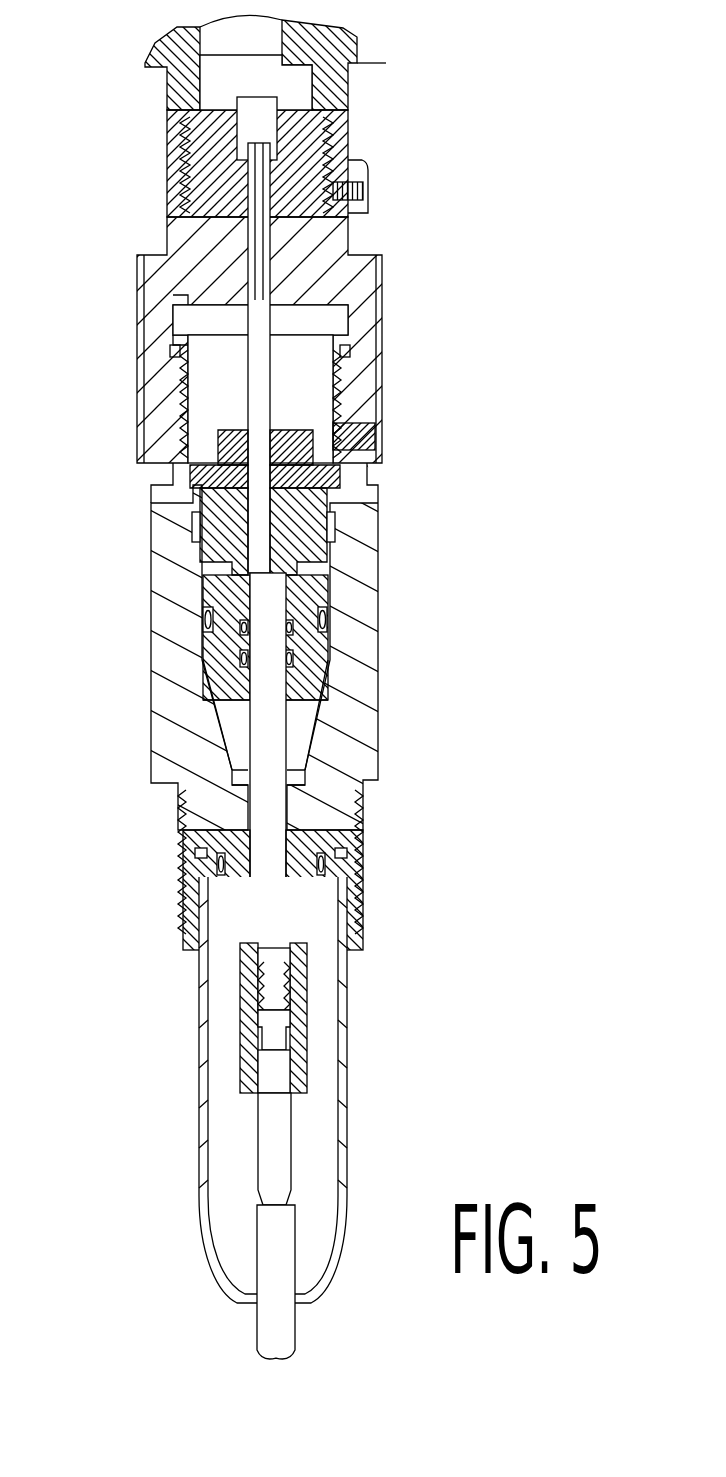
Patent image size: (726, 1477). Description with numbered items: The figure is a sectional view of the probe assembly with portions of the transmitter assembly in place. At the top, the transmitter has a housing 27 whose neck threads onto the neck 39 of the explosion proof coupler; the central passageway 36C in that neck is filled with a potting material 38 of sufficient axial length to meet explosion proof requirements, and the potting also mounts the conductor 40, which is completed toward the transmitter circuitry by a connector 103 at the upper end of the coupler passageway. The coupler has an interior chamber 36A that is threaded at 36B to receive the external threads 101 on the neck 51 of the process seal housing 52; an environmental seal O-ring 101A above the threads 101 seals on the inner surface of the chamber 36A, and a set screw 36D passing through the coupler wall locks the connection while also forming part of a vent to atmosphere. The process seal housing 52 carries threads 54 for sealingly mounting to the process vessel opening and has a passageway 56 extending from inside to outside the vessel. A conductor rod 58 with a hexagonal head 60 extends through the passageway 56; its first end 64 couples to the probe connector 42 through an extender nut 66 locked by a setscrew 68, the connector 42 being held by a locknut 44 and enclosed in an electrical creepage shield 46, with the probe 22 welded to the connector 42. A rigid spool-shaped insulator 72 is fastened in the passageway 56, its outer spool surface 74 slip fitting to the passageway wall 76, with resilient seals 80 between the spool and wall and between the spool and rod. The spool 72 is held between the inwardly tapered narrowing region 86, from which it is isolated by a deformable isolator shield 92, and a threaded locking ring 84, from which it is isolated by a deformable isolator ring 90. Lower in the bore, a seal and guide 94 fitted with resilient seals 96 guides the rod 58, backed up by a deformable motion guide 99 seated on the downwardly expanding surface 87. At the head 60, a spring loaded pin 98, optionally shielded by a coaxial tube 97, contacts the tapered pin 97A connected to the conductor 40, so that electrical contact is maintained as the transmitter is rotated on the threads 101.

The probe 22 is at (268, 1205).
The housing 27 is at (348, 77).
The interior chamber 36A is at (187, 290).
The threads 36B is at (173, 357).
The central passageway 36C is at (335, 242).
The set screw 36D is at (370, 432).
The potting material 38 is at (183, 160).
The neck 39 is at (205, 122).
The conductor 40 is at (235, 265).
The probe connector 42 is at (267, 1160).
The locknut 44 is at (243, 1100).
The electrical creepage shield 46 is at (350, 1110).
The neck 51 is at (367, 400).
The process seal housing 52 is at (381, 631).
The threads 54 is at (365, 813).
The passageway 56 is at (302, 740).
The conductor rod 58 is at (273, 780).
The hexagonal head 60 is at (330, 552).
The first end 64 is at (275, 980).
The extender nut 66 is at (297, 1013).
The setscrew 68 is at (280, 1070).
The spool-shaped insulator 72 is at (330, 588).
The outer spool surface 74 is at (207, 662).
The passageway wall 76 is at (317, 668).
The resilient seals 80 is at (245, 632).
The threaded locking ring 84 is at (330, 484).
The narrowing region 86 is at (215, 752).
The downwardly expanding surface 87 is at (207, 835).
The isolator ring 90 is at (340, 515).
The isolator shield 92 is at (213, 703).
The seal and guide 94 is at (318, 878).
The resilient seals 96 is at (250, 922).
The coaxial tube 97 is at (257, 335).
The pin 97A is at (263, 345).
The spring loaded pin 98 is at (263, 472).
The deformable motion guide 99 is at (347, 830).
The external threads 101 is at (178, 365).
The environmental seal O-ring 101A is at (168, 345).
The connector 103 is at (213, 130).